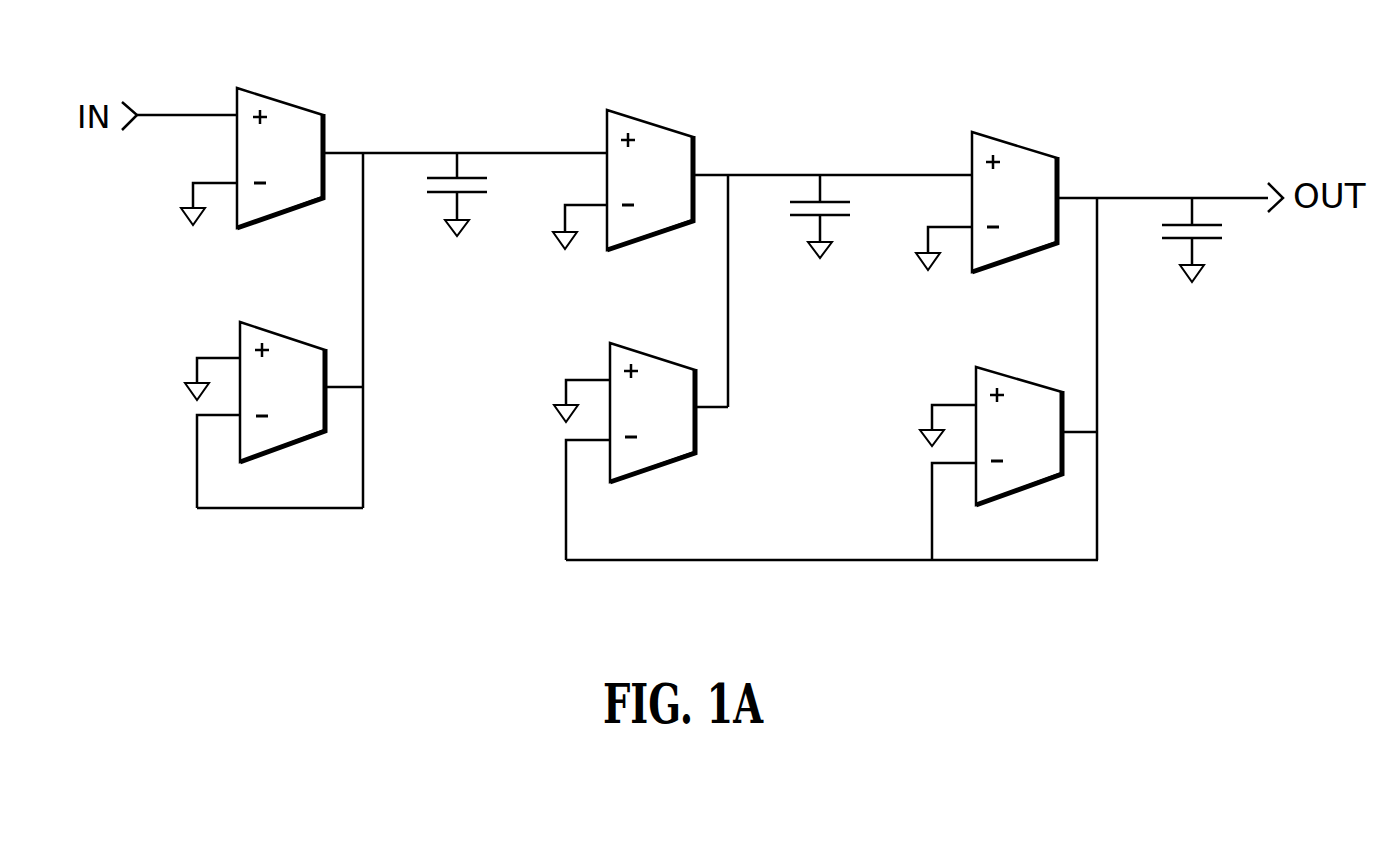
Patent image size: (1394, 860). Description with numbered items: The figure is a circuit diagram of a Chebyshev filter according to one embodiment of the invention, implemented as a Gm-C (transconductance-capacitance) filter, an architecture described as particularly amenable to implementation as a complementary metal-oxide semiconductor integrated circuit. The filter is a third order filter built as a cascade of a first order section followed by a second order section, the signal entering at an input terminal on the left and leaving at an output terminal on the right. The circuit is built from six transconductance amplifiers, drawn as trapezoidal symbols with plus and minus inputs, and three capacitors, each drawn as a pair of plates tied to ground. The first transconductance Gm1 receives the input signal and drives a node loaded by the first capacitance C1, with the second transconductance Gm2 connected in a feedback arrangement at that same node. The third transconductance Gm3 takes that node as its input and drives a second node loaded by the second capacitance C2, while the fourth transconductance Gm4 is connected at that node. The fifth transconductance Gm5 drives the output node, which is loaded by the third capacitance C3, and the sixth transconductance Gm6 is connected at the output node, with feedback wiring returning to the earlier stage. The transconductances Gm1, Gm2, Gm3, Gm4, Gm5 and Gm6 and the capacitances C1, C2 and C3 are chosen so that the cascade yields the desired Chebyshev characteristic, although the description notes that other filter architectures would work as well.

The transconductance Gm1 is at (285, 98).
The transconductance Gm2 is at (248, 322).
The transconductance Gm3 is at (653, 120).
The transconductance Gm4 is at (618, 343).
The transconductance Gm5 is at (1018, 140).
The transconductance Gm6 is at (982, 367).
The capacitance C1 is at (450, 195).
The capacitance C2 is at (813, 220).
The capacitance C3 is at (1187, 244).